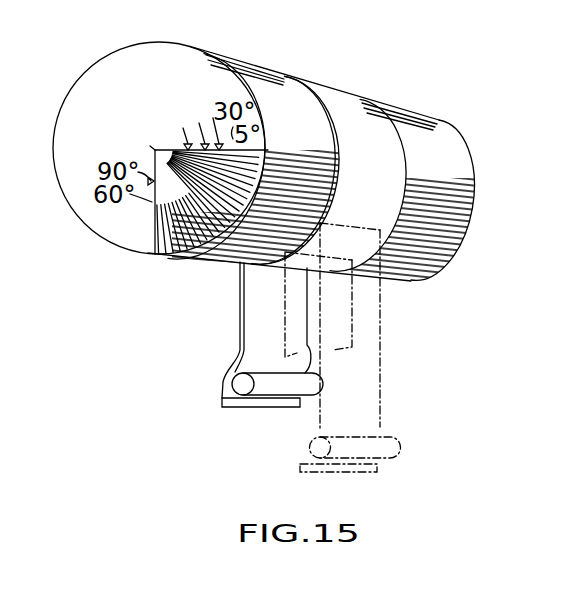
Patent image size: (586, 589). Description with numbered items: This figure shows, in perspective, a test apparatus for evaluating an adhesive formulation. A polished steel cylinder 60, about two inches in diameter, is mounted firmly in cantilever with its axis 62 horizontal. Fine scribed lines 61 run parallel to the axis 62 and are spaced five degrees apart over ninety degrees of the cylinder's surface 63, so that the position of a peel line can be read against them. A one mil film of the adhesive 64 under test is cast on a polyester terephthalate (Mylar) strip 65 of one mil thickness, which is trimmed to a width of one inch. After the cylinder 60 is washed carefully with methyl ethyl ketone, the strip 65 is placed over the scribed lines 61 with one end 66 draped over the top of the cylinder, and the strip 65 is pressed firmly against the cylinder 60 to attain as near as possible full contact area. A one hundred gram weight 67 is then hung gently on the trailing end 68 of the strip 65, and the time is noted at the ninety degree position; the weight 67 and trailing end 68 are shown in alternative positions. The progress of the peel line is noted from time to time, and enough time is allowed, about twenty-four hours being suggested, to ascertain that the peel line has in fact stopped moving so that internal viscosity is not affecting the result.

The polished steel cylinder 60 is at (157, 48).
The scribed lines 61 is at (272, 163).
The axis 62 is at (156, 148).
The surface 63 is at (229, 71).
The adhesive 64 is at (240, 281).
The polyester terephthalate strip 65 is at (327, 97).
The end 66 is at (301, 80).
The weight 67 is at (262, 395).
The trailing end 68 is at (222, 397).